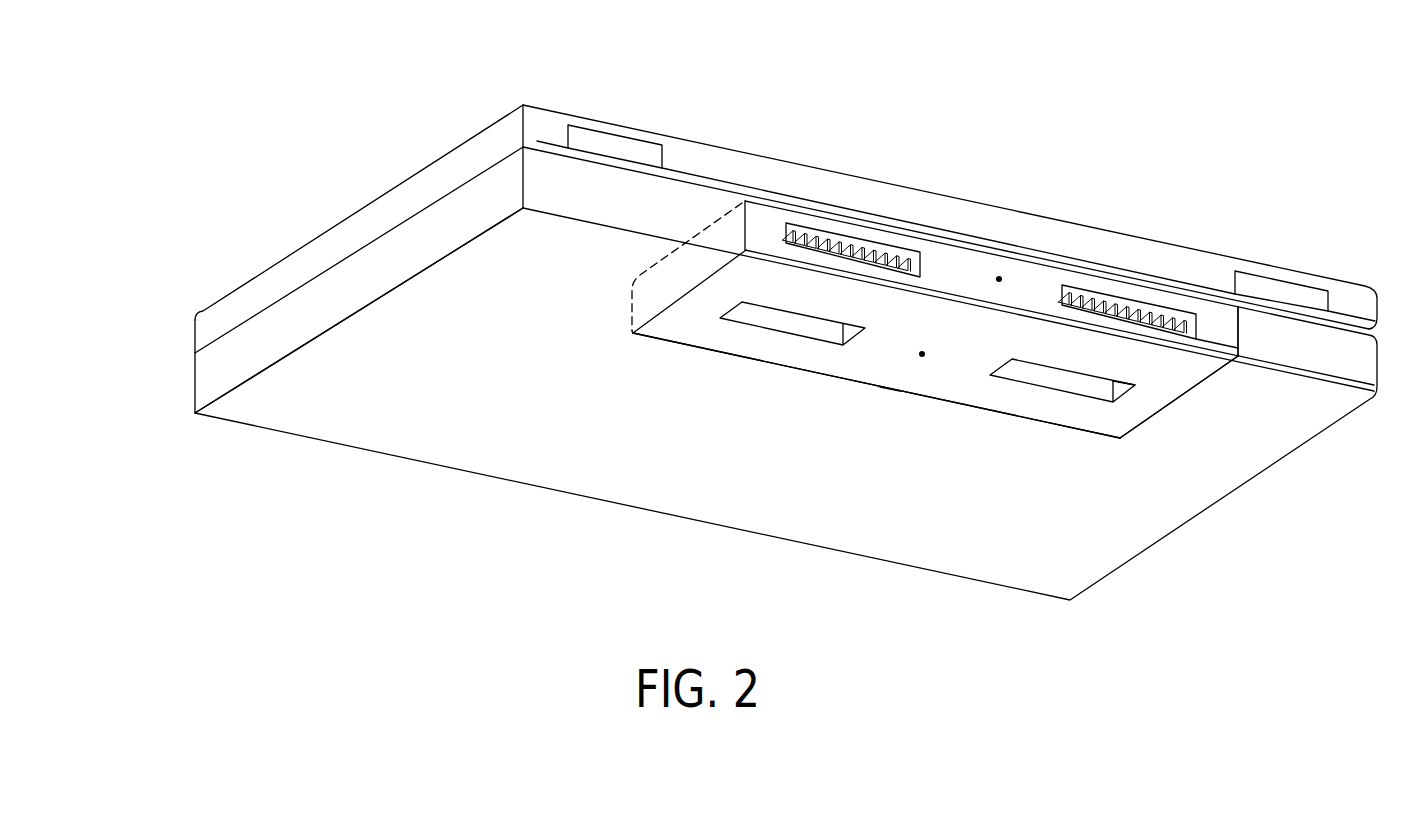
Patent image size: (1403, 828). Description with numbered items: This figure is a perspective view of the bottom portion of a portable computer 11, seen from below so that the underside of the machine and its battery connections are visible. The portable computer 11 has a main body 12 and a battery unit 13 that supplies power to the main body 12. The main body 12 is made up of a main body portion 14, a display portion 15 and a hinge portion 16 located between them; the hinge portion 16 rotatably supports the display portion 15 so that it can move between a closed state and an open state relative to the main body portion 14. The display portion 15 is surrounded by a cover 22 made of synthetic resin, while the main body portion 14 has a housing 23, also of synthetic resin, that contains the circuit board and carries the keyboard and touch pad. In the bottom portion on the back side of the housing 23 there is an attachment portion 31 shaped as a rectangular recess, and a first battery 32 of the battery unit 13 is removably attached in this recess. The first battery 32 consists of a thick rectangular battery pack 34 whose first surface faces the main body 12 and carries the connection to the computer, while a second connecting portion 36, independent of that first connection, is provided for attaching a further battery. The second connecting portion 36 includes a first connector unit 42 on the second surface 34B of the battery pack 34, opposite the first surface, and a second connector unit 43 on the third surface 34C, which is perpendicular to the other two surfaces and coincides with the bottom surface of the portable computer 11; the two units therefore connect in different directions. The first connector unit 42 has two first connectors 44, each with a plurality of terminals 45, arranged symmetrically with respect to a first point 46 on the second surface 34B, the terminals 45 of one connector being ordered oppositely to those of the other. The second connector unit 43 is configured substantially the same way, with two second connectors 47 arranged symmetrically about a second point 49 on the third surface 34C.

The portable computer 11 is at (1122, 96).
The main body 12 is at (1287, 250).
The battery unit 13 is at (1206, 280).
The main body portion 14 is at (195, 385).
The display portion 15 is at (195, 330).
The hinge portion 16 is at (623, 148).
The cover 22 is at (326, 240).
The housing 23 is at (278, 429).
The attachment portion 31 is at (888, 410).
The first battery 32 is at (827, 379).
The battery pack 34 is at (977, 407).
The second surface 34B is at (770, 222).
The third surface 34C is at (677, 335).
The second connecting portion 36 is at (1237, 380).
The first connector unit 42 is at (1228, 334).
The second connector unit 43 is at (1143, 403).
The first connector 44 is at (882, 242).
The terminal 45 is at (837, 242).
The first point 46 is at (999, 276).
The second connector 47 is at (773, 333).
The second point 49 is at (923, 357).